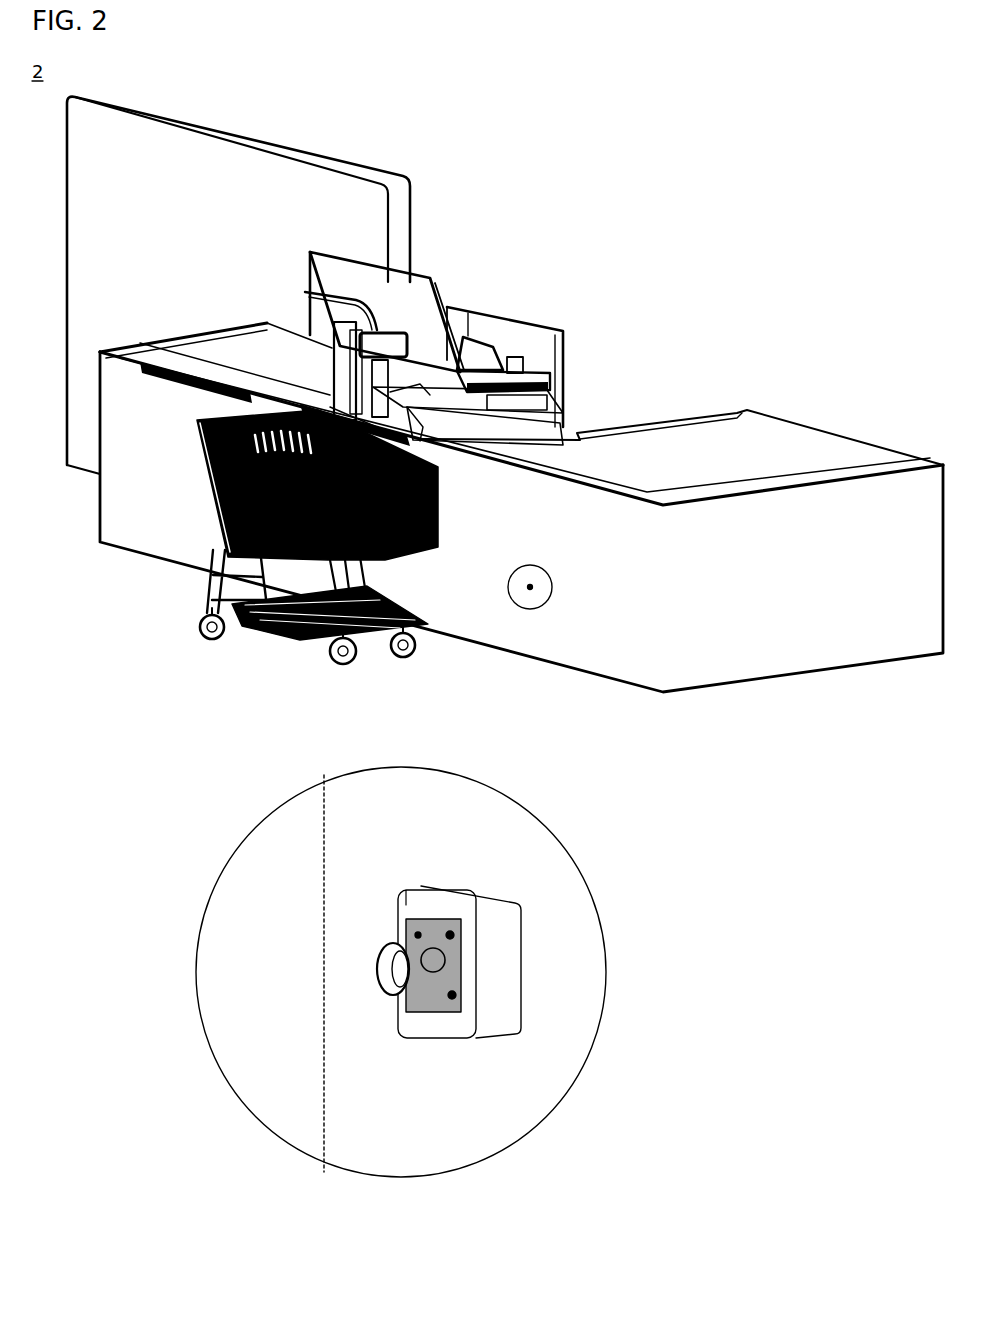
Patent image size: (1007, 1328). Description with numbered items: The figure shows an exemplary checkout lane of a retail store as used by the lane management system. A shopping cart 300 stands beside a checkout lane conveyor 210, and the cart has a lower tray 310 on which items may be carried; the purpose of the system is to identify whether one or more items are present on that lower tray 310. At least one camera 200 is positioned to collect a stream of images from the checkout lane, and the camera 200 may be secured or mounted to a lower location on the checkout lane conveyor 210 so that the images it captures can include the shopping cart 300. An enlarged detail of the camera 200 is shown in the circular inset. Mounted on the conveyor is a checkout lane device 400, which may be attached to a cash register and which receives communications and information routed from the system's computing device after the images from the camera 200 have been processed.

The camera 200 is at (550, 593).
The checkout lane conveyor 210 is at (658, 475).
The shopping cart 300 is at (210, 490).
The lower tray 310 is at (255, 618).
The checkout lane device 400 is at (317, 318).